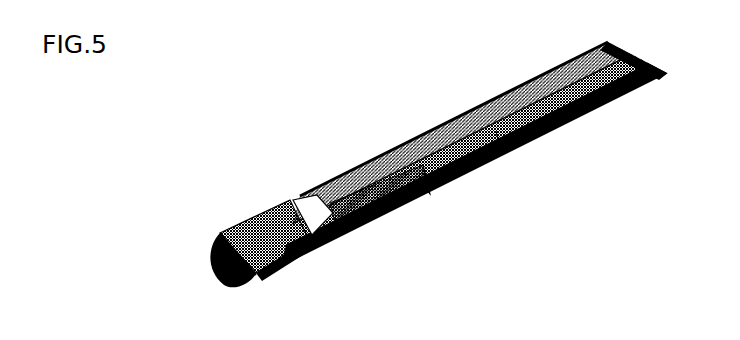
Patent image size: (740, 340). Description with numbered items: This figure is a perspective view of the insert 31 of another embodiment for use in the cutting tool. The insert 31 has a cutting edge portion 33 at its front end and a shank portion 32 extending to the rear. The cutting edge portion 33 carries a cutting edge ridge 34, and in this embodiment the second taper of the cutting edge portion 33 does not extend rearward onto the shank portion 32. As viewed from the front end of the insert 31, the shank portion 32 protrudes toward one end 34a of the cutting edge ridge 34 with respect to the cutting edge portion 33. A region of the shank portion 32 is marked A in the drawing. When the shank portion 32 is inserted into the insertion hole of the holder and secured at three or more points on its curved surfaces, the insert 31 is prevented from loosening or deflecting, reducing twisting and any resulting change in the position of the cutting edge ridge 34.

The insert 31 is at (438, 180).
The shank portion 32 is at (474, 168).
The cutting edge portion 33 is at (233, 221).
The cutting edge ridge 34 is at (242, 289).
The one end of cutting edge ridge 34a is at (256, 277).
The flat region A is at (360, 230).